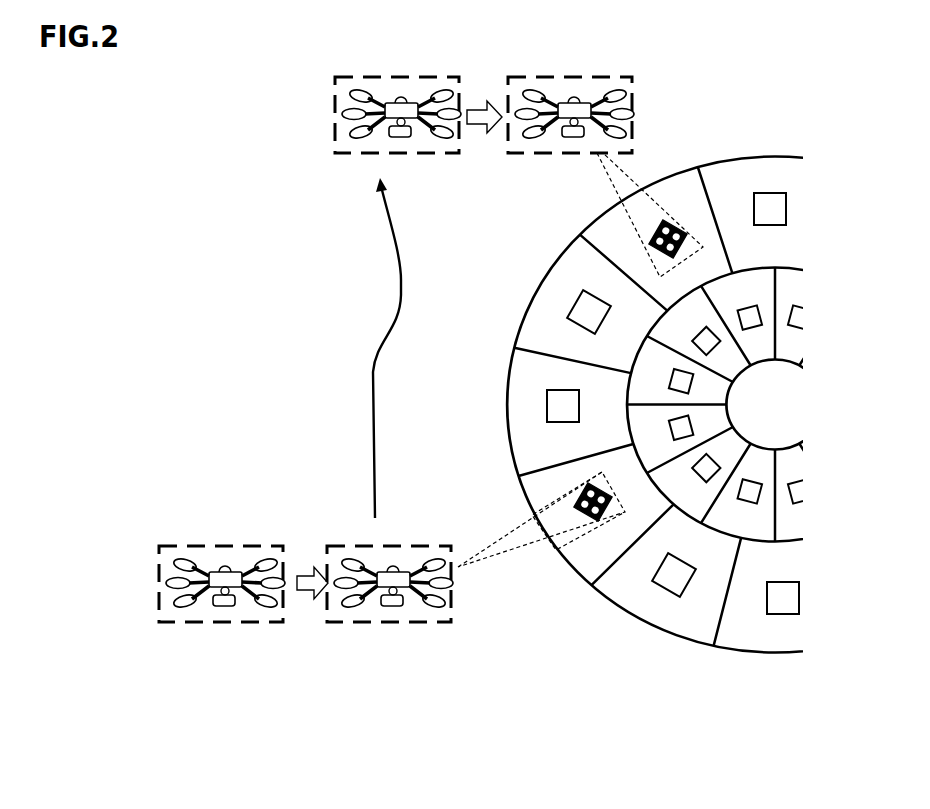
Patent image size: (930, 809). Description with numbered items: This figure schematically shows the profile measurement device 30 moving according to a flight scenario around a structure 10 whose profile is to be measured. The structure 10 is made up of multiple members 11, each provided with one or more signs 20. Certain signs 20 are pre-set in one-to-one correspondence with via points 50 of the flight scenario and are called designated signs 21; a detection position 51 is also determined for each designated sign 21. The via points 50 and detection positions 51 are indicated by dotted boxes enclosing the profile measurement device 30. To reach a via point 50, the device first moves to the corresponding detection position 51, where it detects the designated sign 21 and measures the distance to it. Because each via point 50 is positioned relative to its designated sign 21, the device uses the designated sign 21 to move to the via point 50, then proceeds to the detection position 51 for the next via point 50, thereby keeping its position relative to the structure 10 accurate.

The structure 10 is at (681, 440).
The member 11 is at (690, 618).
The sign 20 is at (775, 607).
The designated sign 21 is at (575, 492).
The profile measurement device 30 is at (233, 561).
The via point 50 is at (530, 157).
The detection position 51 is at (305, 393).